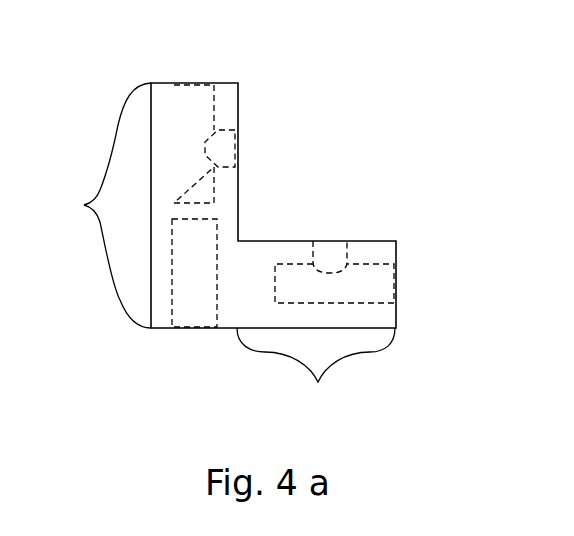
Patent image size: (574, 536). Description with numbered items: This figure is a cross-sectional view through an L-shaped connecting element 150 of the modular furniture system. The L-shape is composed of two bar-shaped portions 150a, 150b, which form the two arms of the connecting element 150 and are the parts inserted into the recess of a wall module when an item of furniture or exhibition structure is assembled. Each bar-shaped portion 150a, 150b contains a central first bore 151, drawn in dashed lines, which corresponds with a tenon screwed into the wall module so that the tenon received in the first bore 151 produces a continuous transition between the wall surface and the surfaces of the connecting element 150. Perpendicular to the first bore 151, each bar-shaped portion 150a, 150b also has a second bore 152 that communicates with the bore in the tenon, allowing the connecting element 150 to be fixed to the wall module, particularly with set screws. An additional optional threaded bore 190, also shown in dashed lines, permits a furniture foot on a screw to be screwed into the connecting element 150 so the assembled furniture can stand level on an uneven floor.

The L-shaped connecting element 150 is at (228, 106).
The bar-shaped portion 150a is at (84, 205).
The bar-shaped portion 150b is at (318, 382).
The first bore 151 is at (195, 81).
The second bore 152 is at (240, 147).
The threaded bore 190 is at (191, 329).